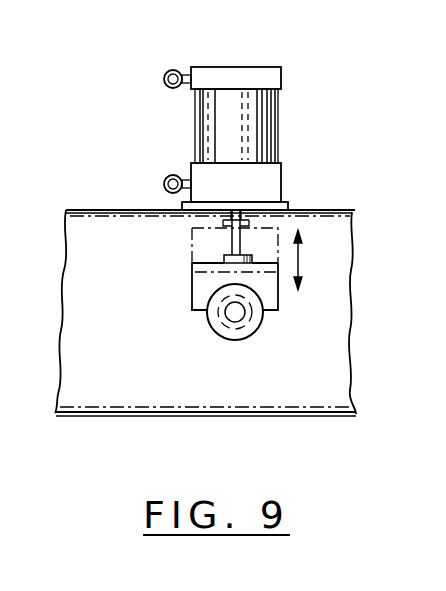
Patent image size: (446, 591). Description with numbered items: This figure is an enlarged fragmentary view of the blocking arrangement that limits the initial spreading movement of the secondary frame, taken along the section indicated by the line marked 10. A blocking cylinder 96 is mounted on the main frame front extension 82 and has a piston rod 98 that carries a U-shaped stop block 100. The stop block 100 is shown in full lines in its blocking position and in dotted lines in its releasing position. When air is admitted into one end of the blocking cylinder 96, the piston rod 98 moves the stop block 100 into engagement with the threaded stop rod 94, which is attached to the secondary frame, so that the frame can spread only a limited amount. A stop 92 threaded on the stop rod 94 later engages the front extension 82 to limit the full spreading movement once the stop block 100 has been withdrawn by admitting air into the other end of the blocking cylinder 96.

The section line 10- 10 is at (117, 157).
The main frame front extension 82 is at (338, 357).
The stop 92 is at (248, 333).
The threaded stop rod 94 is at (233, 312).
The blocking cylinder 96 is at (263, 132).
The piston rod 98 is at (229, 243).
The U-shaped stop block 100 is at (282, 300).